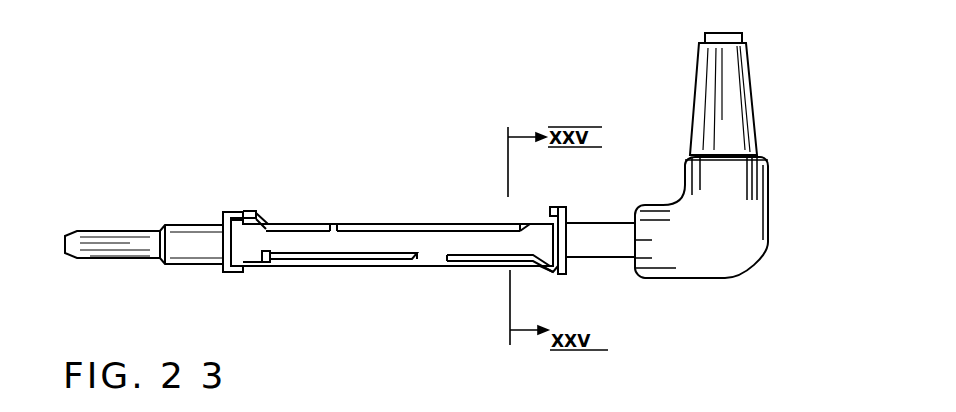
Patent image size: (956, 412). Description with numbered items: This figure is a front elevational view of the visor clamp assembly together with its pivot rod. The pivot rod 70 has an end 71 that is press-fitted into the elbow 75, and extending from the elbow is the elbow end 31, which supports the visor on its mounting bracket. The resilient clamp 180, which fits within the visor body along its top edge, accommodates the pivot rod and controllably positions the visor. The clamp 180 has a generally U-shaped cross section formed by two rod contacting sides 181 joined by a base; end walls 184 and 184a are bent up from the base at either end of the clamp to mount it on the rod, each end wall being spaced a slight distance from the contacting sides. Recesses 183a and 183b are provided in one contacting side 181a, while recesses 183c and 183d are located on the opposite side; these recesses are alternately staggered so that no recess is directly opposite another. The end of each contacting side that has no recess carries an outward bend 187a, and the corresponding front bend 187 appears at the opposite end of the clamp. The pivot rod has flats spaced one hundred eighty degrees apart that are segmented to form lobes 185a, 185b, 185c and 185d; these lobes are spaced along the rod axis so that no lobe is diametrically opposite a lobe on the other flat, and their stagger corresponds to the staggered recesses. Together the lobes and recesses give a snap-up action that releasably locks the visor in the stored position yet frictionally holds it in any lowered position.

The elbow end 31 is at (712, 92).
The elbow 75 is at (750, 181).
The pivot rod end 71 is at (623, 222).
The pivot rod 70 is at (679, 286).
The resilient clamp 180 is at (292, 210).
The rod contacting sides 181 is at (334, 268).
The contacting side 181a is at (433, 222).
The recess 183a is at (252, 267).
The recess 183b is at (378, 262).
The recess 183c is at (511, 212).
The recess 183d is at (367, 212).
The end wall 184 is at (225, 208).
The end wall 184a is at (566, 275).
The lobe 185a is at (262, 267).
The lobe 185b is at (442, 262).
The lobe 185c is at (582, 181).
The lobe 185d is at (337, 221).
The front hook 187 is at (267, 207).
The outward bend 187a is at (550, 274).